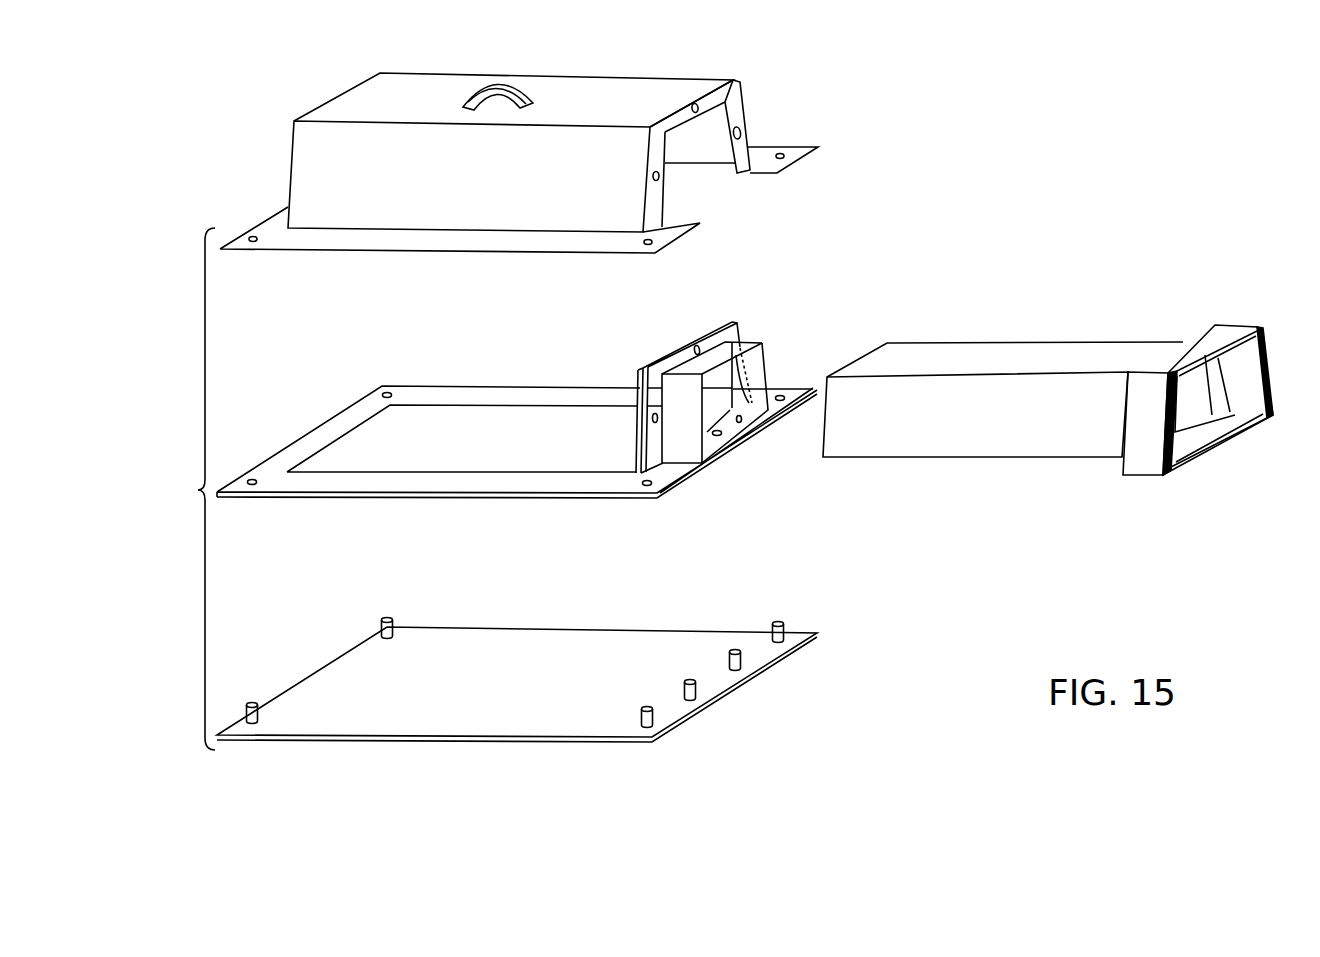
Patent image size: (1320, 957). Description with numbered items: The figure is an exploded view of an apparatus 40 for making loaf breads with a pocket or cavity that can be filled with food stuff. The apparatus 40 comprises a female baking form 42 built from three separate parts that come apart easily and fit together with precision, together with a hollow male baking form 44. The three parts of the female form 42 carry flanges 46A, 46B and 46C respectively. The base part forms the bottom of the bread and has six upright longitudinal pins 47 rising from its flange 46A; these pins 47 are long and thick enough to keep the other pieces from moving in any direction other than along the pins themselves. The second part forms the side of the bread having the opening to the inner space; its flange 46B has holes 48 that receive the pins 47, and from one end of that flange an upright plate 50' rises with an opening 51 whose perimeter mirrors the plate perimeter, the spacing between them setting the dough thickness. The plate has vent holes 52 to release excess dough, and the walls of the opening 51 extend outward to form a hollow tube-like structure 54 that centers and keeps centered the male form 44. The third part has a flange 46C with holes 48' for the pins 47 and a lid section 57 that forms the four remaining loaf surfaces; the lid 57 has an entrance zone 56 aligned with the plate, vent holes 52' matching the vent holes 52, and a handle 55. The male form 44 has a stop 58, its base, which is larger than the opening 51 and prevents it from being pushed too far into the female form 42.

The apparatus 40 is at (957, 168).
The female baking form 42 is at (186, 489).
The male baking form 44 is at (1020, 275).
The flange of part A 46A is at (515, 727).
The flange of part B 46B is at (536, 421).
The flange of part C 46C is at (520, 172).
The upright longitudinal pins 47 is at (653, 718).
The holes 48 is at (678, 522).
The holes 48' is at (731, 213).
The L-bracket 50' is at (719, 377).
The opening 51 is at (757, 425).
The vent holes 52 is at (734, 464).
The vent holes 52' is at (721, 143).
The hollow tube-like structure 54 is at (757, 370).
The handle 55 is at (512, 88).
The entrance zone 56 is at (748, 117).
The lid section 57 is at (628, 95).
The stop 58 is at (1148, 465).